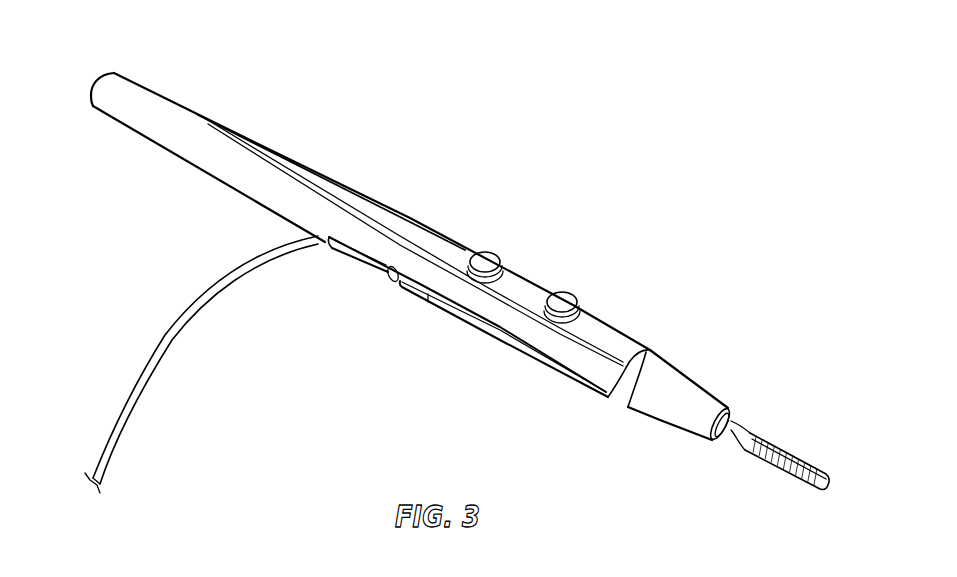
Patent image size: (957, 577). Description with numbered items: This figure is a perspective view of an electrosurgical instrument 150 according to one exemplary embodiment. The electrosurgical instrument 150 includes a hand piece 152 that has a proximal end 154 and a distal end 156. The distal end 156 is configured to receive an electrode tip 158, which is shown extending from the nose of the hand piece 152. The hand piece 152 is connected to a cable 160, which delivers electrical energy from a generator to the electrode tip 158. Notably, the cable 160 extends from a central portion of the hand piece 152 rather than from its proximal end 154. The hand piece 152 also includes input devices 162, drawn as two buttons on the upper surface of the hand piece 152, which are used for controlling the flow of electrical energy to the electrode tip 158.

The electrosurgical instrument 150 is at (541, 157).
The hand piece 152 is at (328, 180).
The proximal end 154 is at (136, 80).
The distal end 156 is at (697, 388).
The electrode tip 158 is at (772, 445).
The cable 160 is at (160, 353).
The input devices 162 is at (494, 261).